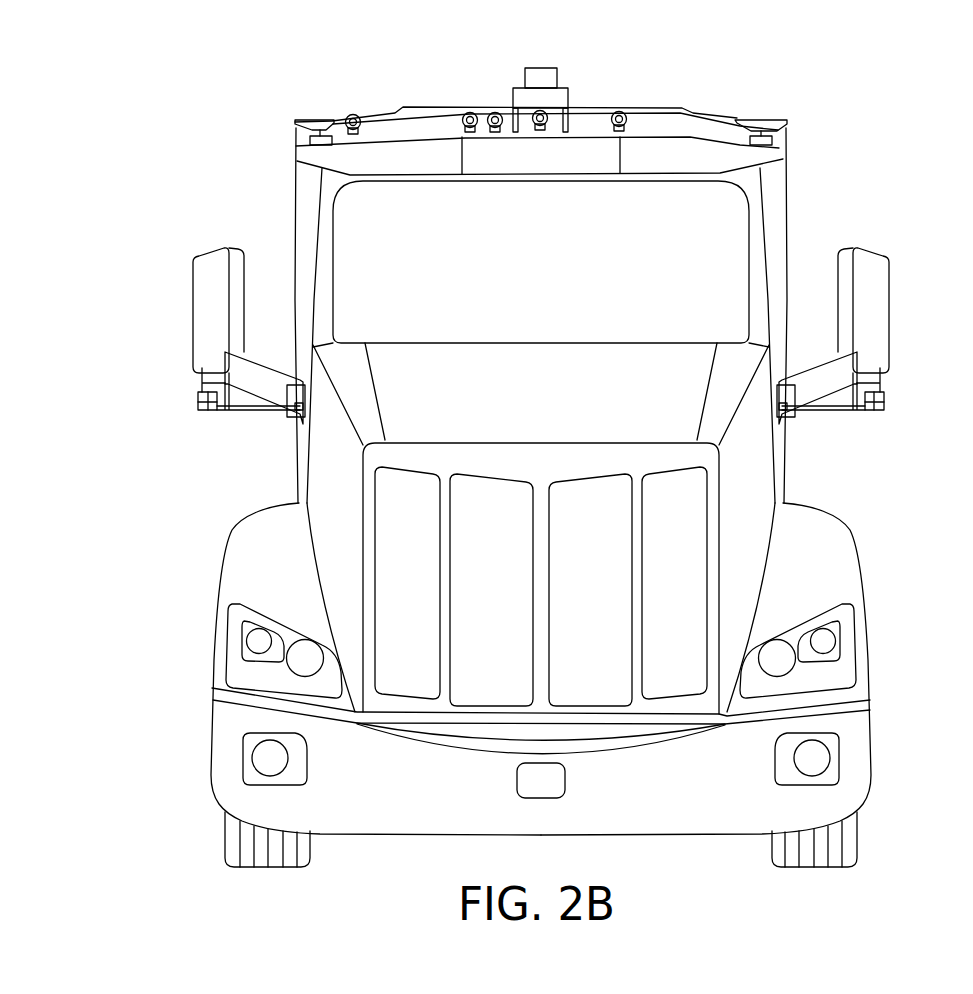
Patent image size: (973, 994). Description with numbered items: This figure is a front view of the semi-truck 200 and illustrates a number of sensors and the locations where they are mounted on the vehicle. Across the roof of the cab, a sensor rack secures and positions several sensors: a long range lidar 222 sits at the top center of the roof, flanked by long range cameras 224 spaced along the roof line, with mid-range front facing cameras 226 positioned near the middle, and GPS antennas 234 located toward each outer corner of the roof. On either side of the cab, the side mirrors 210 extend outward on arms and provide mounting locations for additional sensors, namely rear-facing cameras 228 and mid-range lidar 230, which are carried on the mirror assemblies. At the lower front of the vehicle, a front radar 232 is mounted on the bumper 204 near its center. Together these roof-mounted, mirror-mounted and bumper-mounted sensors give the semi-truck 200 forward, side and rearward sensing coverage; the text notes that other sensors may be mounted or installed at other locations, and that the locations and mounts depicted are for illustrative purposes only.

The semi-truck 200 is at (243, 92).
The bumper 204 is at (653, 808).
The side mirrors 210 is at (210, 245).
The long range lidar 222 is at (542, 78).
The long range cameras 224 is at (470, 113).
The mid-range front facing cameras 226 is at (540, 111).
The rear-facing cameras 228 is at (232, 398).
The mid-range lidar 230 is at (198, 400).
The front radar 232 is at (535, 780).
The GPS antennas 234 is at (320, 127).